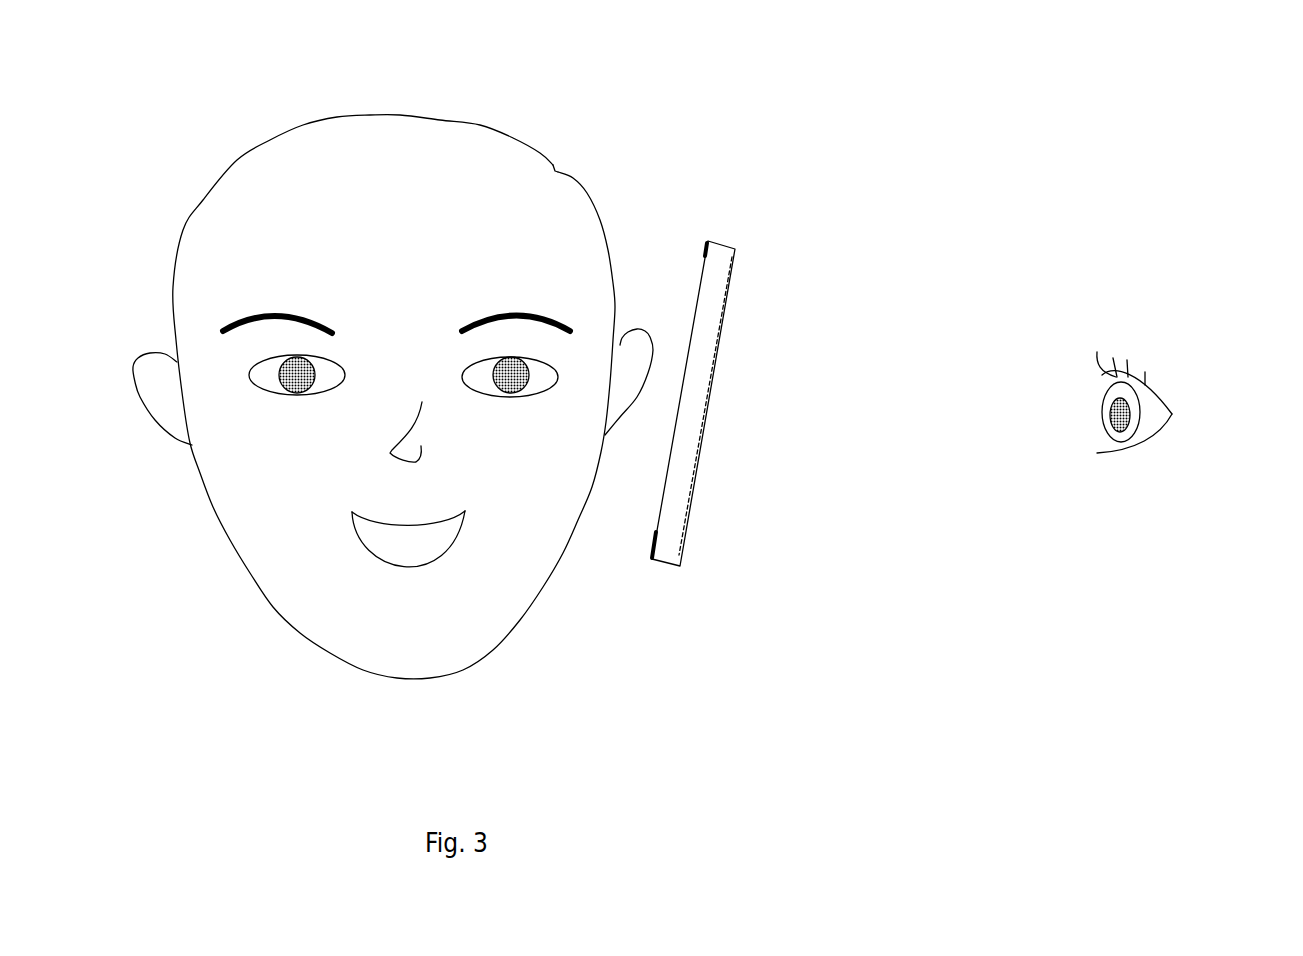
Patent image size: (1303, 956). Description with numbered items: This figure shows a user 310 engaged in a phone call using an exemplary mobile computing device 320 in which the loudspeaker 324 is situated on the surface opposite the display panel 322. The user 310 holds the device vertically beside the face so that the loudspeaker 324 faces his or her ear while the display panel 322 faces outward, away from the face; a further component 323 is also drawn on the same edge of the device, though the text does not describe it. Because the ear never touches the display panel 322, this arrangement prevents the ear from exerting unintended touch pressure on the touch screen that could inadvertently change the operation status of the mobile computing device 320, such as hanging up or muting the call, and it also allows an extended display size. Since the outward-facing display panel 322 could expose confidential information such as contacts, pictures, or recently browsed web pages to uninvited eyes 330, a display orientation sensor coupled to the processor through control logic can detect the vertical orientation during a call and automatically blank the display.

The user 310 is at (480, 120).
The mobile computing device 320 is at (743, 390).
The display panel 322 is at (718, 360).
The camera / sensor 323 is at (651, 545).
The loudspeaker 324 is at (706, 246).
The uninvited eyes 330 is at (1132, 373).